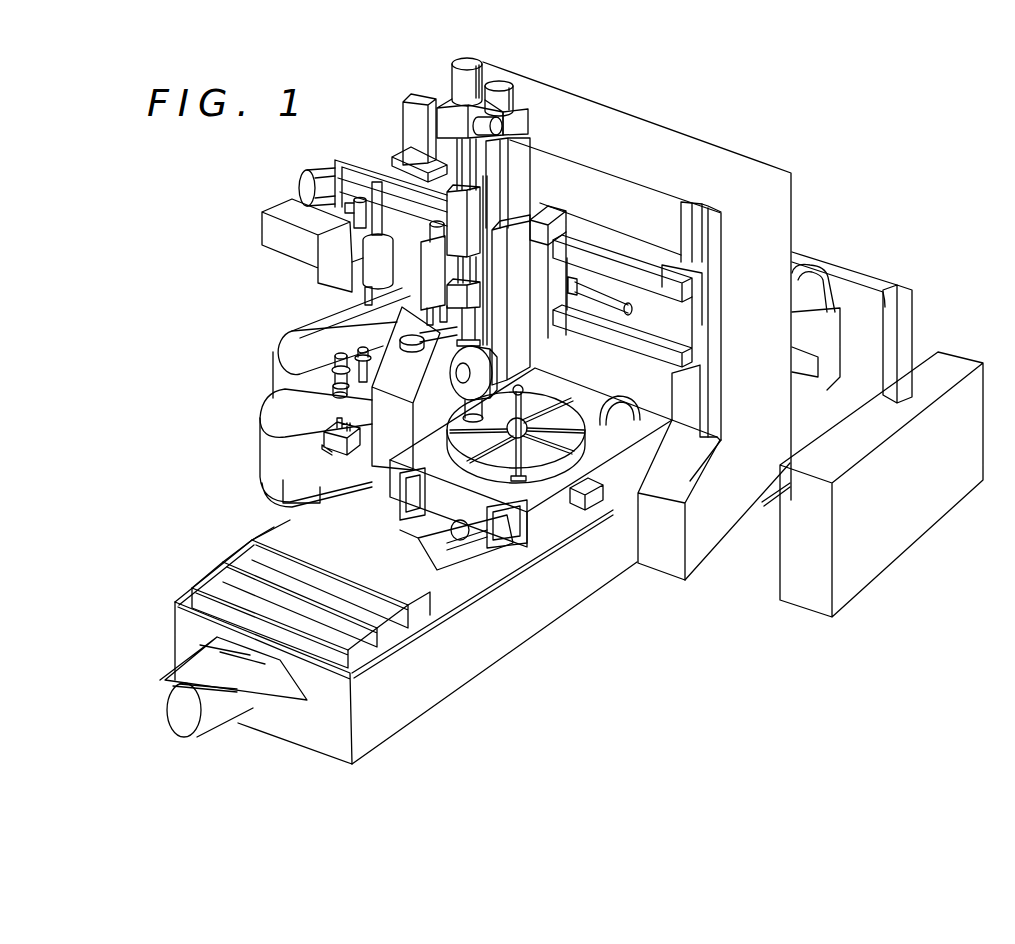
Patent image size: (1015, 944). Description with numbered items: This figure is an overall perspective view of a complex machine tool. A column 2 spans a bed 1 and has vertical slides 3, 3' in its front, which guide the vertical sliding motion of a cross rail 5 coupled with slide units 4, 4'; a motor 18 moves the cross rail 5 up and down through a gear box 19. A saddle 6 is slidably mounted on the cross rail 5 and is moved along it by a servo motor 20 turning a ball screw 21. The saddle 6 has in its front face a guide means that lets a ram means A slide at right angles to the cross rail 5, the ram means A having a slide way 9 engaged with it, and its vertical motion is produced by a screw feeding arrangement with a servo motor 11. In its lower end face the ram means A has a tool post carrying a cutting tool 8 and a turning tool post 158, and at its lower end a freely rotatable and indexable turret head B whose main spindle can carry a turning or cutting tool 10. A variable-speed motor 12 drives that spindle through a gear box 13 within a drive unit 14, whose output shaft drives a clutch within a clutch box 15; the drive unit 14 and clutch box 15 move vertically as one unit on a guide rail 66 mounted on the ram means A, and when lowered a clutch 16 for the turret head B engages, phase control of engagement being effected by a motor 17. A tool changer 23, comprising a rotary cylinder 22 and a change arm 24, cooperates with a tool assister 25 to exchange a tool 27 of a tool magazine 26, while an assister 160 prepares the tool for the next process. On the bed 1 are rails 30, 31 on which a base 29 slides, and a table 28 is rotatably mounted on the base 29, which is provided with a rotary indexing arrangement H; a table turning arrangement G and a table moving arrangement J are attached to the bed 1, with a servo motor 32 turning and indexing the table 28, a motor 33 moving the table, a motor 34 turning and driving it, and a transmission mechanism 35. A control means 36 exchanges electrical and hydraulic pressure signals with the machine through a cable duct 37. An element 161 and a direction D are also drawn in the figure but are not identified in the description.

The bed 1 is at (447, 680).
The column 2 is at (791, 192).
The vertical slide 3 is at (678, 263).
The vertical slide 3' is at (401, 129).
The slide unit 4 is at (645, 268).
The slide unit 4' is at (379, 144).
The cross rail 5 is at (712, 318).
The saddle 6 is at (540, 220).
The cutting tool 8 is at (525, 388).
The slide way 9 is at (510, 174).
The turning or cutting tool 10 is at (462, 420).
The servo motor 11 is at (505, 82).
The variable-speed motor 12 is at (476, 62).
The gear box 13 is at (448, 105).
The drive unit 14 is at (445, 222).
The clutch box 15 is at (493, 300).
The clutch 16 is at (455, 392).
The motor 17 is at (530, 121).
The motor 18 is at (440, 101).
The gear box 19 is at (419, 164).
The servo motor 20 is at (315, 182).
The ball screw 21 is at (388, 178).
The rotary cylinder 22 is at (420, 252).
The tool changer 23 is at (420, 300).
The change arm 24 is at (414, 345).
The tool assister 25 is at (318, 258).
The tool magazine 26 is at (278, 345).
The tool 27 is at (343, 352).
The table 28 is at (578, 420).
The base 29 is at (640, 470).
The rail 30 is at (430, 565).
The rail 31 is at (396, 508).
The servo motor 32 is at (612, 410).
The motor 33 is at (180, 707).
The motor 34 is at (800, 275).
The transmission mechanism 35 is at (840, 340).
The control means 36 is at (932, 530).
The cable duct 37 is at (890, 268).
The guide rail 66 is at (492, 323).
The turning tool post 158 is at (522, 386).
The assister 160 is at (364, 297).
The pin 161 is at (350, 224).
The ram means A is at (541, 180).
The turret head B is at (435, 379).
The direction D is at (467, 56).
The table turning arrangement G is at (846, 278).
The rotary indexing arrangement H is at (628, 393).
The table moving arrangement J is at (155, 693).